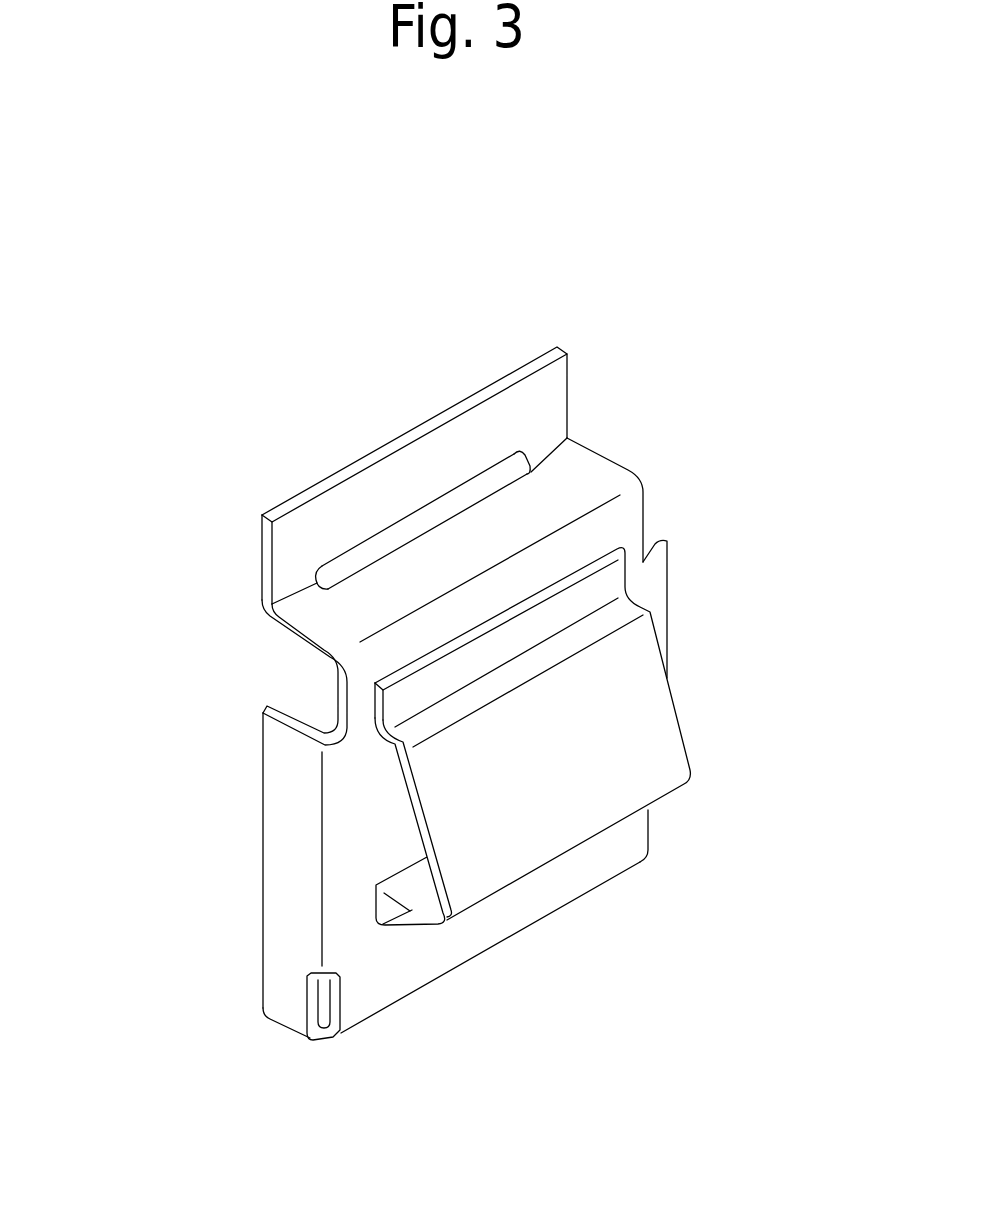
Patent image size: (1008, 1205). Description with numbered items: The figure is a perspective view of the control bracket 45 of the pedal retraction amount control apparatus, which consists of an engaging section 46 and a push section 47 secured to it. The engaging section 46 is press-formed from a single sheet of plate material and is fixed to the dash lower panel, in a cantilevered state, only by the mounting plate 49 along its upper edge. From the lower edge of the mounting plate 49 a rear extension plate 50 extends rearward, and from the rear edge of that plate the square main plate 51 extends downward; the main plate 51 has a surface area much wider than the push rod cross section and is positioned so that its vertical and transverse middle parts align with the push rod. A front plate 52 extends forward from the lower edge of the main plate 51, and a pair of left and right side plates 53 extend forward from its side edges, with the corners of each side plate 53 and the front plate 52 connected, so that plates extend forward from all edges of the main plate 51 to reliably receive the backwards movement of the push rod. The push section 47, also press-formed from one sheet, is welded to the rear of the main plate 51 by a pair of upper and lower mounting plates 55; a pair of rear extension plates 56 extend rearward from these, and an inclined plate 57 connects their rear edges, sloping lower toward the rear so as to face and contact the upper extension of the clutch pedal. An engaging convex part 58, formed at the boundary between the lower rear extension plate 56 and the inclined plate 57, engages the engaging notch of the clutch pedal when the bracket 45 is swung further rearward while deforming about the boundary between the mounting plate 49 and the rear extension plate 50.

The control bracket 45 is at (766, 363).
The engaging section 46 is at (660, 480).
The push section 47 is at (708, 751).
The mounting plate 49 is at (373, 482).
The rear extension plate 50 is at (573, 493).
The main plate 51 is at (615, 527).
The front plate 52 is at (287, 1016).
The side plates 53 is at (658, 536).
The mounting plates 55 is at (397, 707).
The rear extension plates 56 is at (393, 737).
The inclined plate 57 is at (620, 712).
The engaging convex part 58 is at (563, 855).